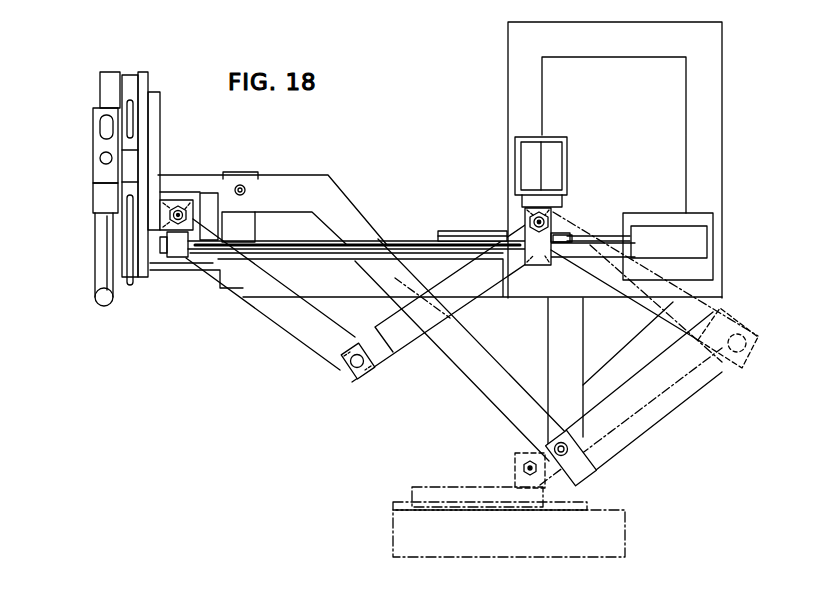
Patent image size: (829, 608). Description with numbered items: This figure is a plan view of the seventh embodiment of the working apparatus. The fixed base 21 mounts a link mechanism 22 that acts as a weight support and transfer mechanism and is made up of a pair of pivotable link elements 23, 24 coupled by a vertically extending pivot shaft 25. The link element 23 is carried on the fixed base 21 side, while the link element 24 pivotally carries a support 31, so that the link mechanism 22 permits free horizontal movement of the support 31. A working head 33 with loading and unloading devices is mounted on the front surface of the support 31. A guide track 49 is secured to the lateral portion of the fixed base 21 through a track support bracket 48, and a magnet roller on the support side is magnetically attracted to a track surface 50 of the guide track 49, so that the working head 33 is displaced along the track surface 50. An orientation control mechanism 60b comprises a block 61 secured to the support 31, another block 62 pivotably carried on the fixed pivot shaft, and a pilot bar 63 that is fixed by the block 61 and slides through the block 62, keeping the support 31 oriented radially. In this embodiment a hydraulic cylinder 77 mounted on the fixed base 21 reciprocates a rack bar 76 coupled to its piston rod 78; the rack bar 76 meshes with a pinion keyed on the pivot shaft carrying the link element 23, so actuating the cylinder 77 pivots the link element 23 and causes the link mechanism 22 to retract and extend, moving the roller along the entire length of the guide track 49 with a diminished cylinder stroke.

The fixed base 21 is at (712, 132).
The link mechanism 22 is at (290, 340).
The link element 23 is at (473, 282).
The link element 24 is at (253, 297).
The pivot shaft 25 is at (345, 372).
The support 31 is at (143, 72).
The working head 33 is at (88, 167).
The track support bracket 48 is at (380, 228).
The guide track 49 is at (475, 378).
The track surface 50 is at (440, 348).
The orientation control mechanism 60b is at (294, 236).
The block 61 is at (181, 200).
The block 62 is at (525, 228).
The pilot bar 63 is at (338, 270).
The rack bar 76 is at (446, 231).
The hydraulic cylinder 77 is at (666, 228).
The piston rod 78 is at (612, 236).